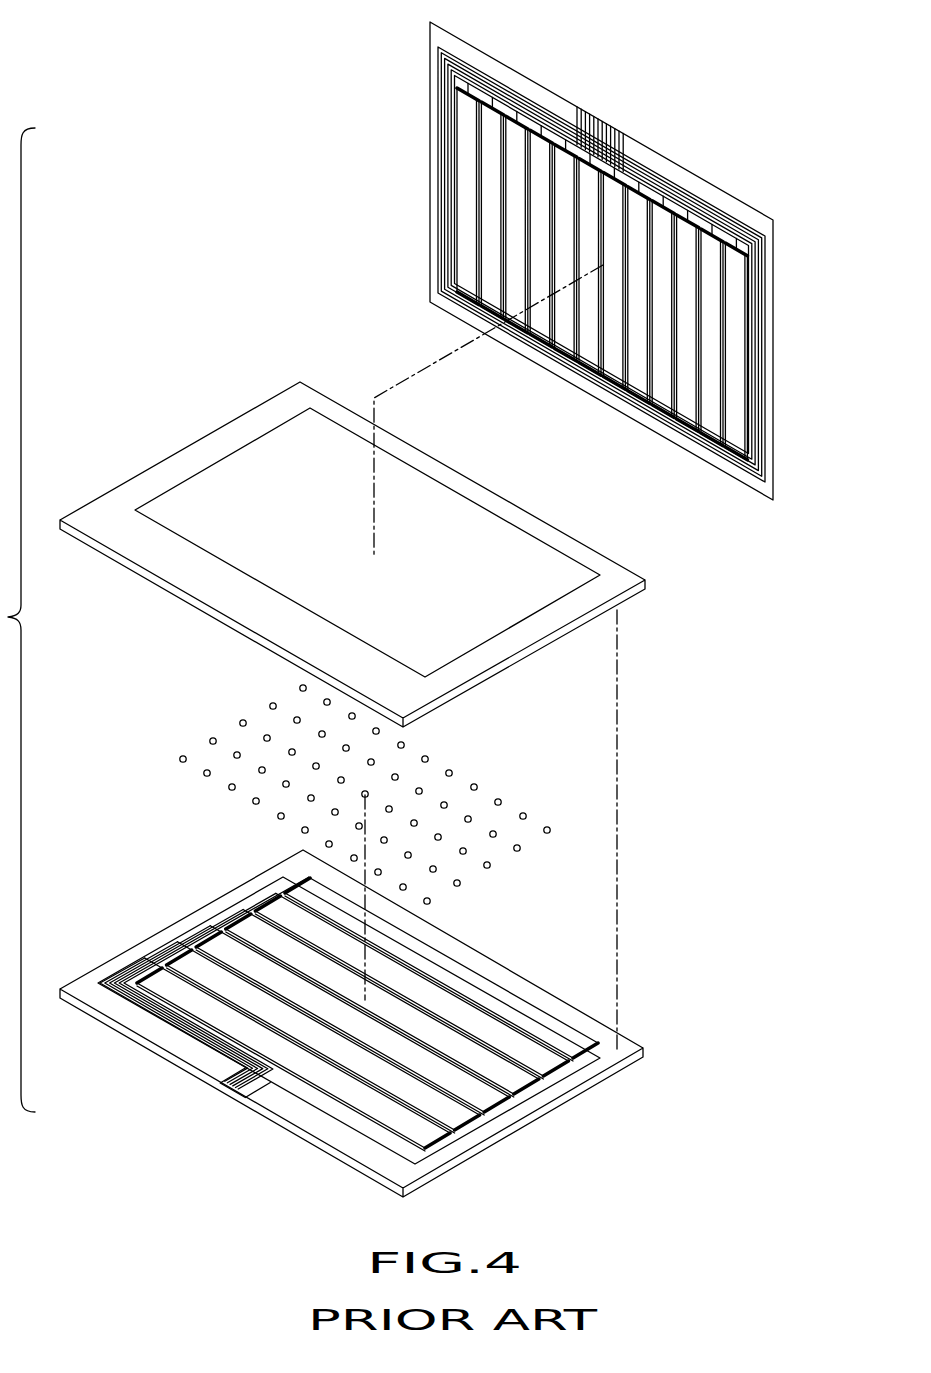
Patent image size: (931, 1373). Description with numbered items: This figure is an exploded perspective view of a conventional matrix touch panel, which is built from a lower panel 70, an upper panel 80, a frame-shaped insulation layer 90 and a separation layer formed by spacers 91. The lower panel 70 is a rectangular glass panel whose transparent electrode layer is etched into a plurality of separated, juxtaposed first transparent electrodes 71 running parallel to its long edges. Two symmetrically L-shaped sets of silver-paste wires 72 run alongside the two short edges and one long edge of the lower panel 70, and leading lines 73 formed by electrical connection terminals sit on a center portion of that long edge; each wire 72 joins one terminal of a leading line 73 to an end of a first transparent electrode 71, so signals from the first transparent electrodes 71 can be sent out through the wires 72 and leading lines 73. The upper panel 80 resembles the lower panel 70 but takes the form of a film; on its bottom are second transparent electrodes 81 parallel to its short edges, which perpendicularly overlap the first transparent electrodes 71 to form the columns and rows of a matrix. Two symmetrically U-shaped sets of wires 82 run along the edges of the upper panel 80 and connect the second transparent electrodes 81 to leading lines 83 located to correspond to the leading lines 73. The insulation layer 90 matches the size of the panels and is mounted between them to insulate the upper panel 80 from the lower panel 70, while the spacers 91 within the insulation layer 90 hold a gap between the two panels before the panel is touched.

The lower panel 70 is at (542, 1100).
The first transparent electrodes 71 is at (472, 982).
The wires 72 is at (587, 1068).
The leading lines 73 is at (267, 1095).
The upper panel 80 is at (716, 192).
The second transparent electrodes 81 is at (737, 355).
The wires 82 is at (767, 288).
The leading lines 83 is at (640, 148).
The insulation layer 90 is at (537, 527).
The spacers 91 is at (243, 722).